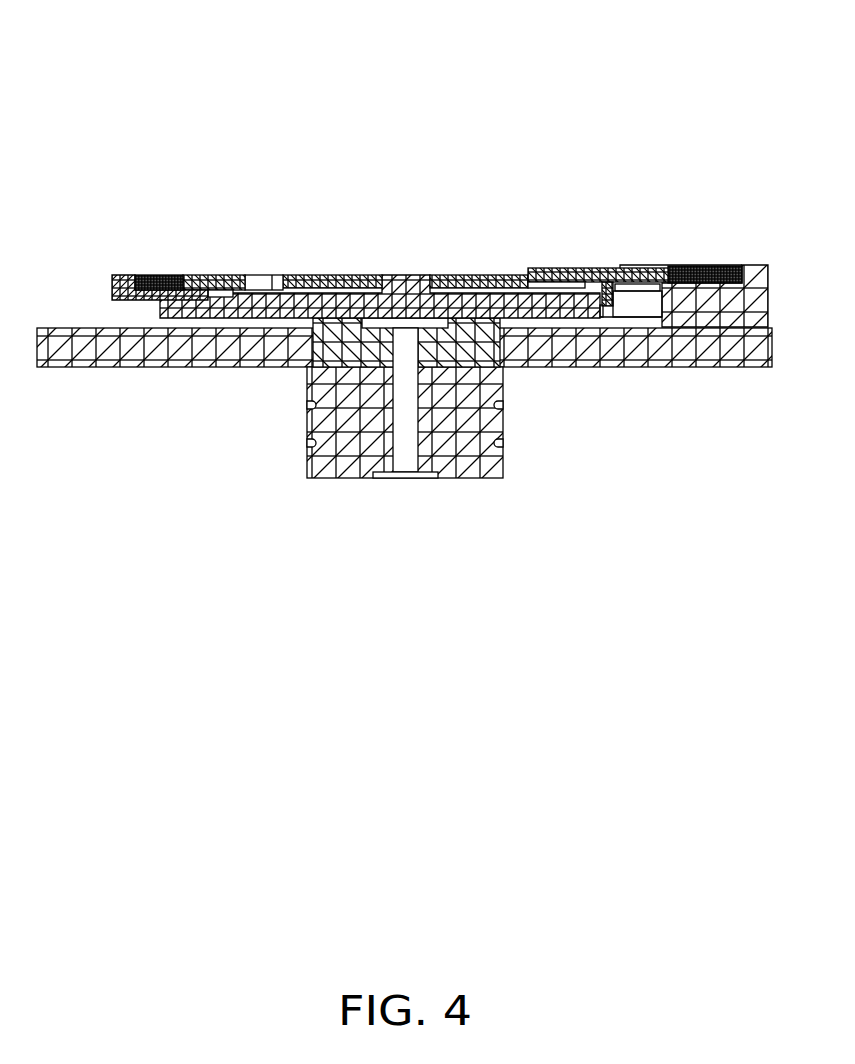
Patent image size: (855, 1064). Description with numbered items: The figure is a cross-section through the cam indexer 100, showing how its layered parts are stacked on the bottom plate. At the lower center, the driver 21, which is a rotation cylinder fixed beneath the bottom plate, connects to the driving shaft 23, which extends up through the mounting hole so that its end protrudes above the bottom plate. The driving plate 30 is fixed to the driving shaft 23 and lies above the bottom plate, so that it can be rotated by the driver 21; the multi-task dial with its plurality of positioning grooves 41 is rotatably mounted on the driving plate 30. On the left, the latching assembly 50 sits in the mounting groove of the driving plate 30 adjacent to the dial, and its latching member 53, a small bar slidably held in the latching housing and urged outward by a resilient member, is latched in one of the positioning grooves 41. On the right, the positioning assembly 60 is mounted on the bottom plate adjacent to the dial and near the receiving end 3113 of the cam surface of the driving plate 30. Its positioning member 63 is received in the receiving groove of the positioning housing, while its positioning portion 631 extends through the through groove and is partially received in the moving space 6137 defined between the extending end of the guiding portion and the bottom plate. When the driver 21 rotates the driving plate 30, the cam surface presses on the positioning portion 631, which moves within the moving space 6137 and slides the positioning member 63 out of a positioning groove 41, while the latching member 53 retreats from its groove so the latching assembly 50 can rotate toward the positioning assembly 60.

The cam indexer 100 is at (406, 51).
The driver 21 is at (453, 448).
The driving shaft 23 is at (333, 355).
The driving plate 30 is at (175, 310).
The positioning grooves 41 is at (257, 275).
The latching assembly 50 is at (129, 264).
The latching member 53 is at (207, 275).
The positioning assembly 60 is at (656, 258).
The positioning member 63 is at (608, 268).
The positioning portion 631 is at (608, 306).
The moving space 6137 is at (653, 318).
The receiving end 3113 is at (602, 318).